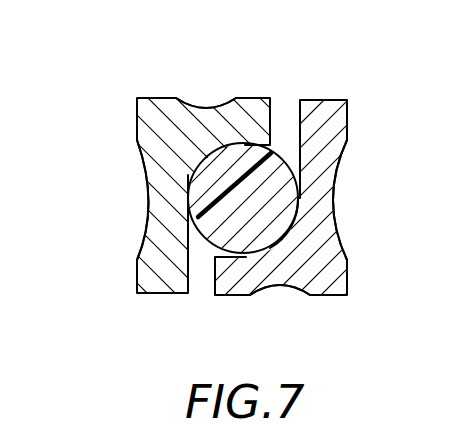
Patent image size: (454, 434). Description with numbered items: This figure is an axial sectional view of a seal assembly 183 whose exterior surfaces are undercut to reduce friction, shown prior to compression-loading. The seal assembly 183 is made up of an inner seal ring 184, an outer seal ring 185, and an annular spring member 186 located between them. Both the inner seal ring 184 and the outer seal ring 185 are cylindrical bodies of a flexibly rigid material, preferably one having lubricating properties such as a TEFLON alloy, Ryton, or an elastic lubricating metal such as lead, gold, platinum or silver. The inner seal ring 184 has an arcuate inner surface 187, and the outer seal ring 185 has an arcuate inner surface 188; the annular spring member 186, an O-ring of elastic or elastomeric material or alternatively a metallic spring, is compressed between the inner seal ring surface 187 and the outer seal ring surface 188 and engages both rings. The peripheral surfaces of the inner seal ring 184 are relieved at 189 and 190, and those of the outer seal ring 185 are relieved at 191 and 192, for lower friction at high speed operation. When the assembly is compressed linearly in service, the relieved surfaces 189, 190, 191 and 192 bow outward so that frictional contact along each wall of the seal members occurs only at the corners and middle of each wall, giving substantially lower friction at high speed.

The seal assembly 183 is at (227, 192).
The inner seal ring 184 is at (227, 164).
The outer seal ring 185 is at (289, 228).
The annular spring member 186 is at (203, 207).
The arcuate inner surface 187 is at (204, 166).
The arcuate inner surface 188 is at (295, 223).
The relieved surface 189 is at (142, 218).
The relieved surface 190 is at (212, 108).
The relieved surface 191 is at (272, 288).
The relieved surface 192 is at (336, 170).